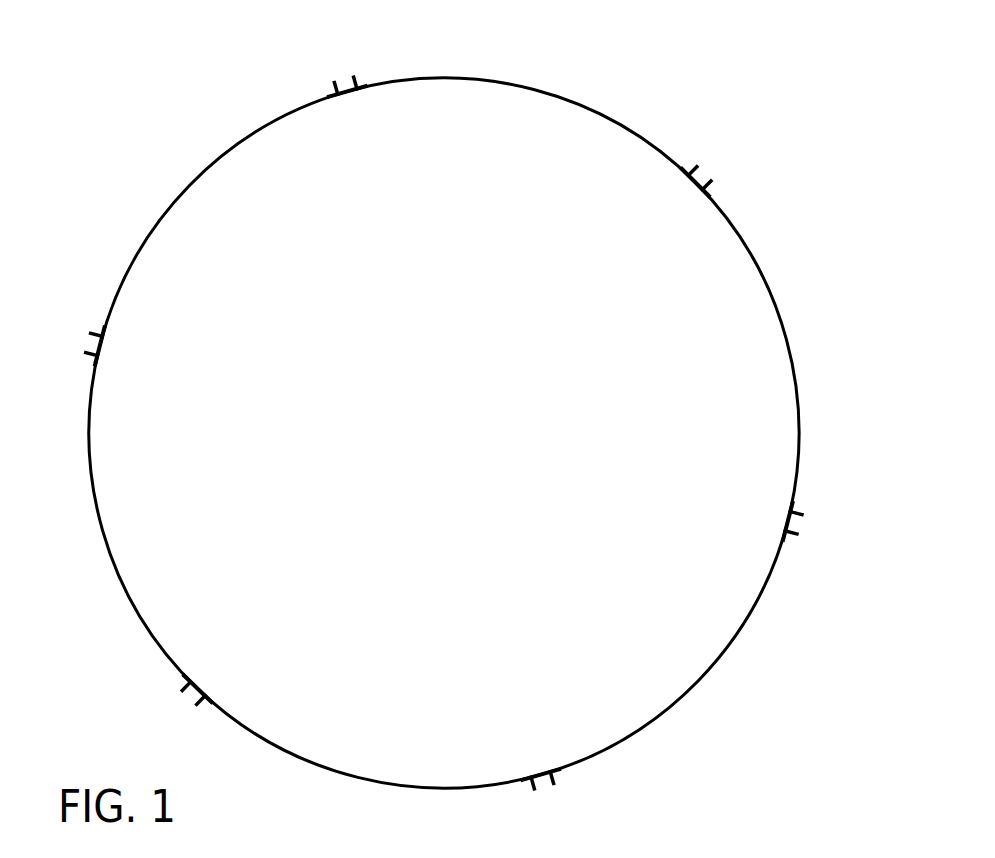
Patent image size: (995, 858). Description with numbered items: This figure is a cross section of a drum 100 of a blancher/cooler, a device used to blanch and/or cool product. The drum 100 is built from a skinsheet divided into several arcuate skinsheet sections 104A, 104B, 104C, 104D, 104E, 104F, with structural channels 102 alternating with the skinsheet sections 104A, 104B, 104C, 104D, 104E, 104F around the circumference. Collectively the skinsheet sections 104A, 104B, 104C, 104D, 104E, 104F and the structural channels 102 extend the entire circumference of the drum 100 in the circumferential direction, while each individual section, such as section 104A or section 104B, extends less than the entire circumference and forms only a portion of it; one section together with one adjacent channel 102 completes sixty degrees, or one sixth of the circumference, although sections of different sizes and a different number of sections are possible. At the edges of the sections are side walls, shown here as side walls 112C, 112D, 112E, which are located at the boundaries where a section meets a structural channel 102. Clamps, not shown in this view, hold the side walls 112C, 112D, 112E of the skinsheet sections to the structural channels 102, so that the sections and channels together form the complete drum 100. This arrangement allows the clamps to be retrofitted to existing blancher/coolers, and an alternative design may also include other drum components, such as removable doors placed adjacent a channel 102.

The drum 100 is at (466, 433).
The structural channel 102 is at (449, 417).
The skinsheet section 104A is at (369, 765).
The skinsheet section 104B is at (664, 647).
The skinsheet section 104C is at (778, 351).
The skinsheet section 104D is at (521, 110).
The skinsheet section 104E is at (219, 218).
The skinsheet section 104F is at (113, 517).
The side wall 112C is at (755, 196).
The side wall 112D is at (533, 100).
The side wall 112E is at (273, 68).